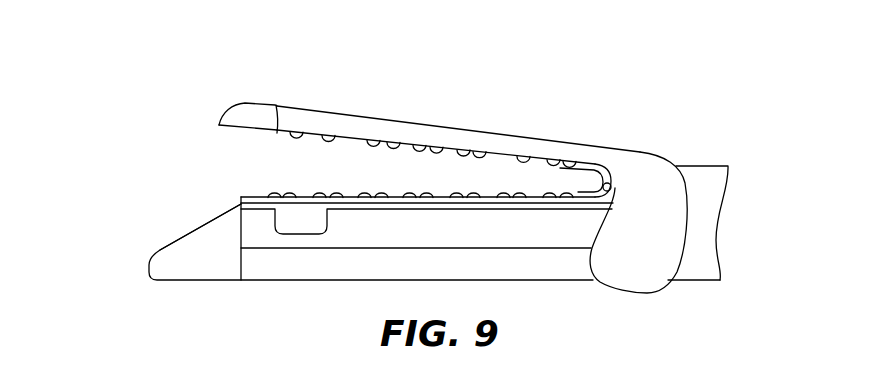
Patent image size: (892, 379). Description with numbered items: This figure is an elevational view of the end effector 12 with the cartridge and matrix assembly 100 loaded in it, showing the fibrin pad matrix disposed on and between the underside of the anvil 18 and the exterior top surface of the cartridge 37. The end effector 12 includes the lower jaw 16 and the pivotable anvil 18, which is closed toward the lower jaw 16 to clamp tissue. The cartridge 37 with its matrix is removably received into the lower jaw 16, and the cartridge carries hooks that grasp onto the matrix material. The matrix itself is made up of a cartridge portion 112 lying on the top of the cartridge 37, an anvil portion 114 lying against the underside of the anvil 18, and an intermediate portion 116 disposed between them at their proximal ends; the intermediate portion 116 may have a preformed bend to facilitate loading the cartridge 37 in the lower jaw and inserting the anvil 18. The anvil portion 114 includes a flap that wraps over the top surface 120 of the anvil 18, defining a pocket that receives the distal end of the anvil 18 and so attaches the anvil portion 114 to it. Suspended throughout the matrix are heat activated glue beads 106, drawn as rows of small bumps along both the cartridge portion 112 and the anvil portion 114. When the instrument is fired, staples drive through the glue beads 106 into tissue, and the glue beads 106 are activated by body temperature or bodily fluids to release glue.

The cartridge and matrix assembly 100 is at (143, 162).
The end effector 12 is at (635, 105).
The lower jaw 16 is at (297, 281).
The anvil 18 is at (348, 114).
The cartridge 37 is at (174, 288).
The glue beads 106 is at (298, 139).
The cartridge portion 112 is at (492, 193).
The anvil portion 114 is at (408, 142).
The intermediate portion 116 is at (620, 191).
The top surface 120 is at (291, 110).